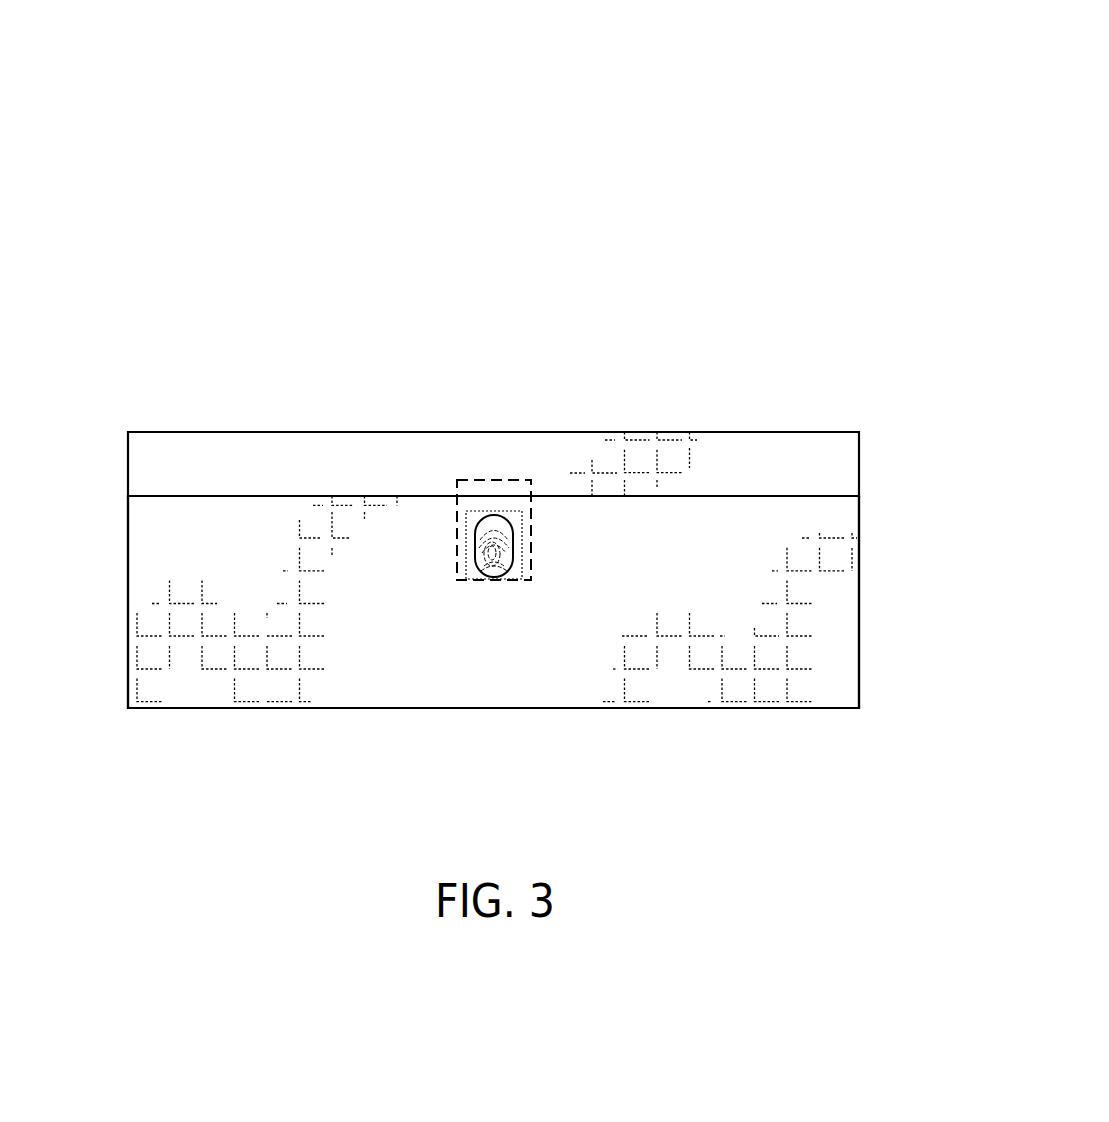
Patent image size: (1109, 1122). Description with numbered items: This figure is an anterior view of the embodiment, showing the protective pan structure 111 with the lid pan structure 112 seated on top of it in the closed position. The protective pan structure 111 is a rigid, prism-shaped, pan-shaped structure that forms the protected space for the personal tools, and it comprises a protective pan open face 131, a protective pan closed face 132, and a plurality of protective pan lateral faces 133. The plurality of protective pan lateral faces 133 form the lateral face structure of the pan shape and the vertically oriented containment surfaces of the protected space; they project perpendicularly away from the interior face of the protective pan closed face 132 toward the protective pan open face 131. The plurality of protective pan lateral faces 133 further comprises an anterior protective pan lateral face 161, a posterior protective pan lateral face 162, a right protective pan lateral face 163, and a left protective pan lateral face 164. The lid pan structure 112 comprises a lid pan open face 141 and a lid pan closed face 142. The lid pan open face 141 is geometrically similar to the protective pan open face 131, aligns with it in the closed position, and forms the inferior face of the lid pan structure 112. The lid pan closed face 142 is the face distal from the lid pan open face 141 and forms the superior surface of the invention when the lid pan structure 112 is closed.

The protective pan structure 111 is at (640, 127).
The lid pan structure 112 is at (208, 350).
The protective pan open face 131 is at (890, 505).
The protective pan closed face 132 is at (813, 708).
The plurality of protective pan lateral faces 133 is at (725, 175).
The lid pan open face 141 is at (158, 432).
The lid pan closed face 142 is at (150, 494).
The anterior protective pan lateral face 161 is at (248, 638).
The posterior protective pan lateral face 162 is at (662, 268).
The right protective pan lateral face 163 is at (114, 603).
The left protective pan lateral face 164 is at (878, 558).